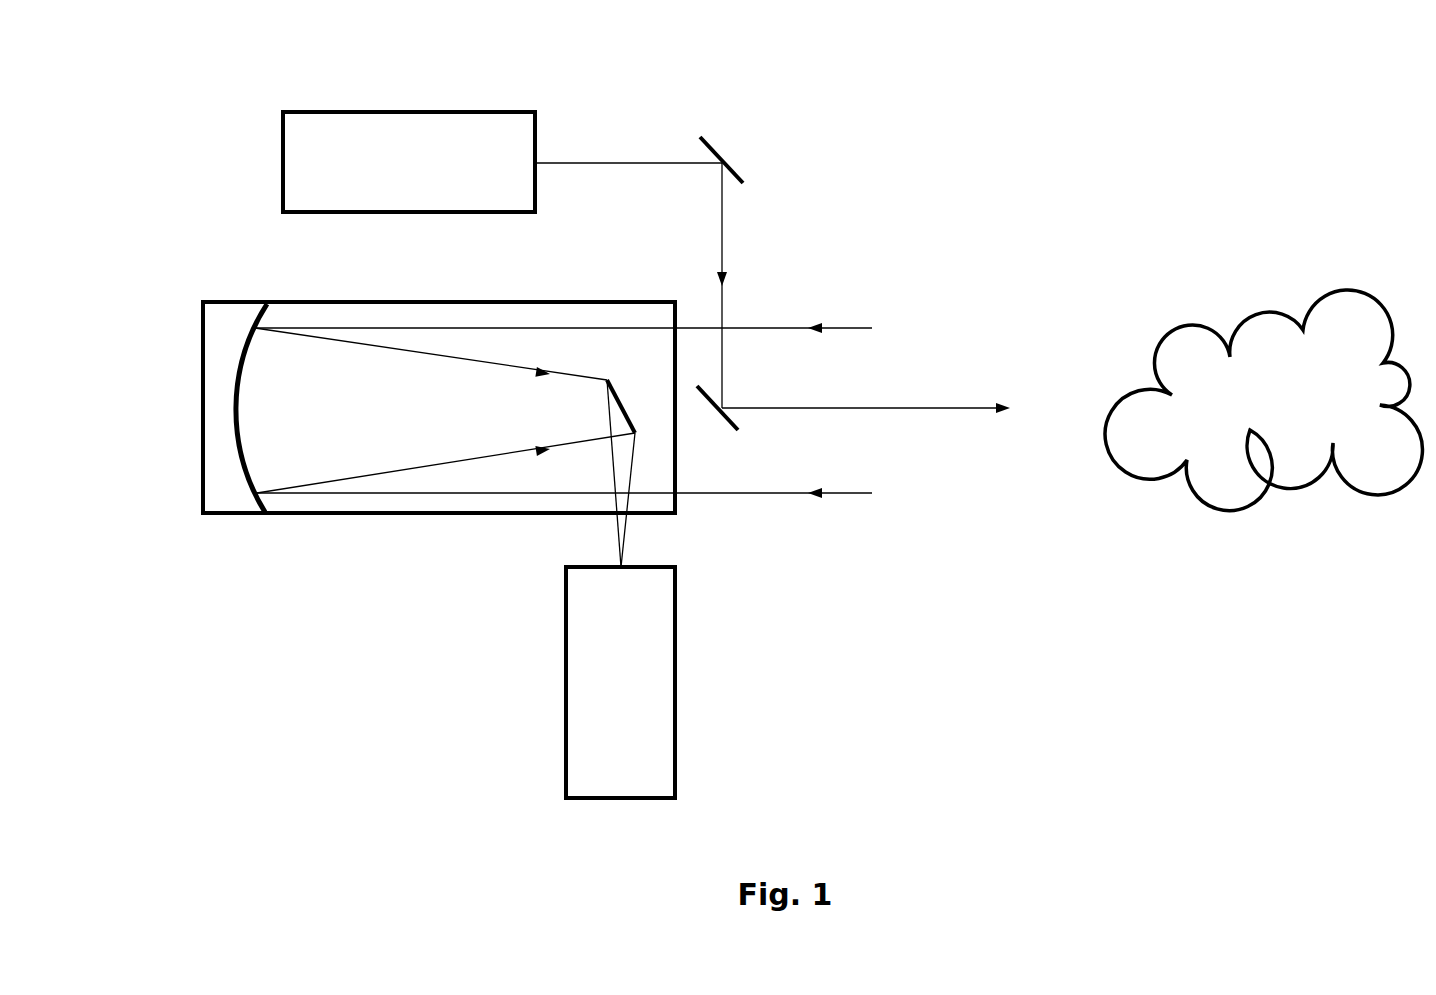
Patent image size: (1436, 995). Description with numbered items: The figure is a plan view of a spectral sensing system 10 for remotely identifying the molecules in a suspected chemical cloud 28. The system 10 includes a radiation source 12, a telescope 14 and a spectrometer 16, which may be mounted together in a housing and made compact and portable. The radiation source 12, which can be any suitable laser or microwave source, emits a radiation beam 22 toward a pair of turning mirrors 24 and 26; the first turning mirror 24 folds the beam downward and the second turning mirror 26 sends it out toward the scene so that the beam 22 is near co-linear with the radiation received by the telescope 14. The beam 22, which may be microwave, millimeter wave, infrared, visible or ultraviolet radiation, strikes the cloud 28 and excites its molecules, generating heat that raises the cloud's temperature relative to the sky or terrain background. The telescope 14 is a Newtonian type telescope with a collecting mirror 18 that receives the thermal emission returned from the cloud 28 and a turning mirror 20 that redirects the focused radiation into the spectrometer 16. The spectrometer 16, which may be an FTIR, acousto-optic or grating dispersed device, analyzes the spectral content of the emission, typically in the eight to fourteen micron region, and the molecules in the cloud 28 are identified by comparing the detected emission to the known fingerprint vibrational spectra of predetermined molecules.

The spectral sensing system 10 is at (967, 104).
The radiation source 12 is at (442, 108).
The telescope 14 is at (317, 510).
The spectrometer 16 is at (675, 742).
The collecting mirror 18 is at (233, 403).
The turning mirror 20 is at (620, 395).
The radiation beam 22 is at (602, 160).
The turning mirror 24 is at (720, 147).
The turning mirror 26 is at (740, 432).
The suspected chemical cloud 28 is at (1275, 302).